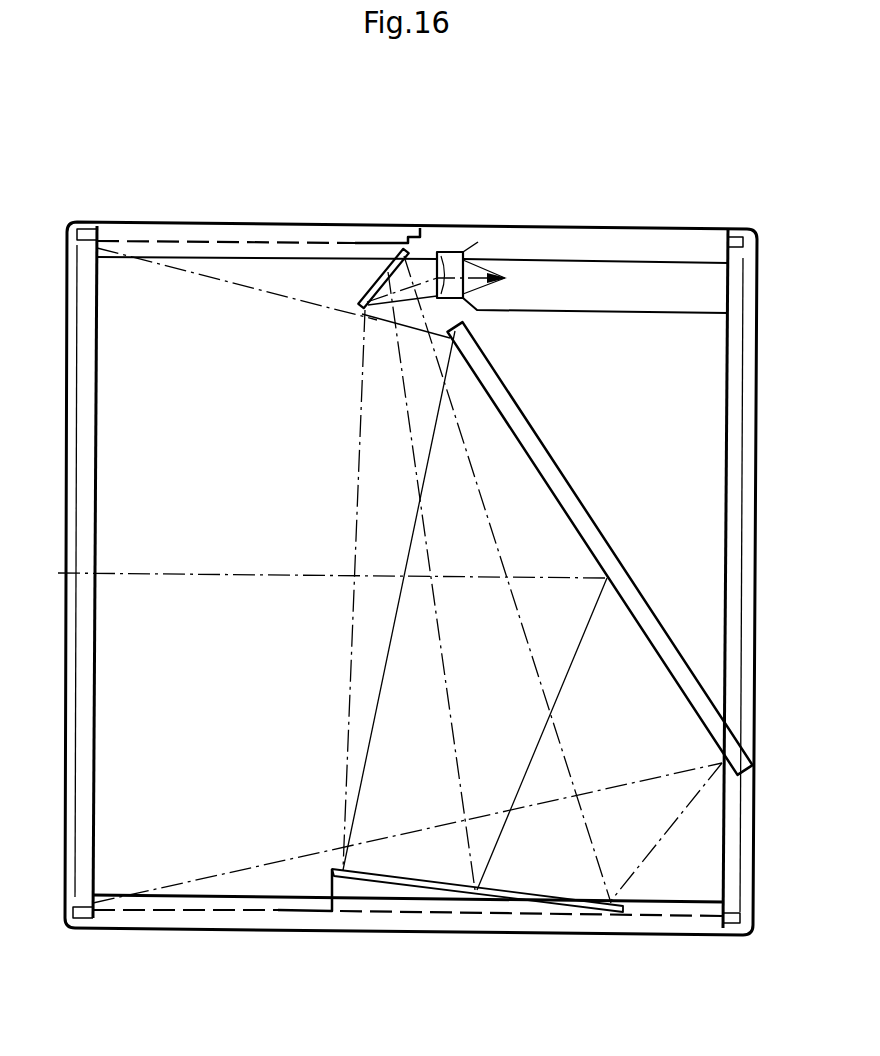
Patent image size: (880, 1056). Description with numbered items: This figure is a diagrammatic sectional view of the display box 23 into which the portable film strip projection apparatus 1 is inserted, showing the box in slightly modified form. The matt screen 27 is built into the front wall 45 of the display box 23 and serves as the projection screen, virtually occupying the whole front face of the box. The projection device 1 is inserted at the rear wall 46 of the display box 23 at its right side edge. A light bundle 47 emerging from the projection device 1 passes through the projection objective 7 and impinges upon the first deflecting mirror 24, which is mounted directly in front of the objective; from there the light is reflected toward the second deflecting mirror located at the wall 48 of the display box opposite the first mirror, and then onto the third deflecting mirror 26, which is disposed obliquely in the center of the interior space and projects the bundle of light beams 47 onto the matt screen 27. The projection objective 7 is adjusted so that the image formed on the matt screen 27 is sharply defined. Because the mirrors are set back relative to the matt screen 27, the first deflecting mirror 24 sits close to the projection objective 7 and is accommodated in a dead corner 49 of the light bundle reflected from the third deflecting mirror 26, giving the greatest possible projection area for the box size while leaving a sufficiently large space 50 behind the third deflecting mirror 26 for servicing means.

The film strip projection apparatus 1 is at (660, 277).
The projection objective 7 is at (443, 253).
The display box 23 is at (310, 934).
The first deflecting mirror 24 is at (374, 290).
The third deflecting mirror 26 is at (592, 523).
The matt screen 27 is at (97, 518).
The front wall 45 is at (70, 240).
The rear wall 46 is at (748, 343).
The light bundle 47 is at (477, 277).
The wall of the display box 48 is at (590, 937).
The dead corner 49 is at (208, 268).
The space 50 is at (627, 396).